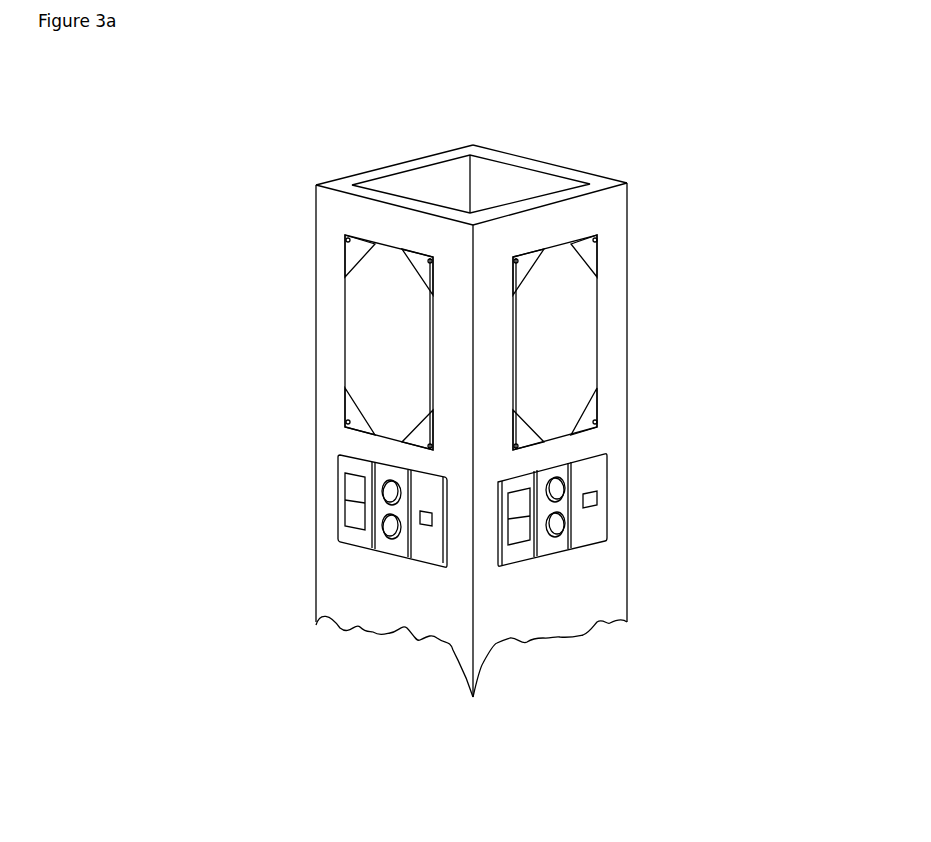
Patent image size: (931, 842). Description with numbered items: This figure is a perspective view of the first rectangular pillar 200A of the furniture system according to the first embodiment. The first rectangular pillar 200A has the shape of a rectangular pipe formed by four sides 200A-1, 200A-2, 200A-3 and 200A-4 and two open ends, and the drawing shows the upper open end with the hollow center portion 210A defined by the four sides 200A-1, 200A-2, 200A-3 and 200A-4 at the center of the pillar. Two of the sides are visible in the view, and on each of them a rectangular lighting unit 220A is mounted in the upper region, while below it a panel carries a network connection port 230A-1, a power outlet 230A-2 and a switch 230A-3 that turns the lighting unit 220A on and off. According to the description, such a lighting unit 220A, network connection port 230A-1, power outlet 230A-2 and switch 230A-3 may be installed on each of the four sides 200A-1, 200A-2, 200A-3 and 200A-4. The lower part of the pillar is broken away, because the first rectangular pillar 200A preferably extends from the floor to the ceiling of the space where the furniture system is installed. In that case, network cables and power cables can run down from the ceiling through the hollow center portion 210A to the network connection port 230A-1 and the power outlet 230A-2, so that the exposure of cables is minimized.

The first rectangular pillar 200A is at (236, 150).
The side 200A-1 is at (343, 217).
The side 200A-2 is at (393, 163).
The side 200A-3 is at (598, 175).
The side 200A-4 is at (602, 217).
The hollow center portion 210A is at (498, 177).
The rectangular lighting unit 220A is at (382, 347).
The network connection port 230A-1 is at (425, 527).
The power outlet 230A-2 is at (385, 538).
The switch 230A-3 is at (343, 511).